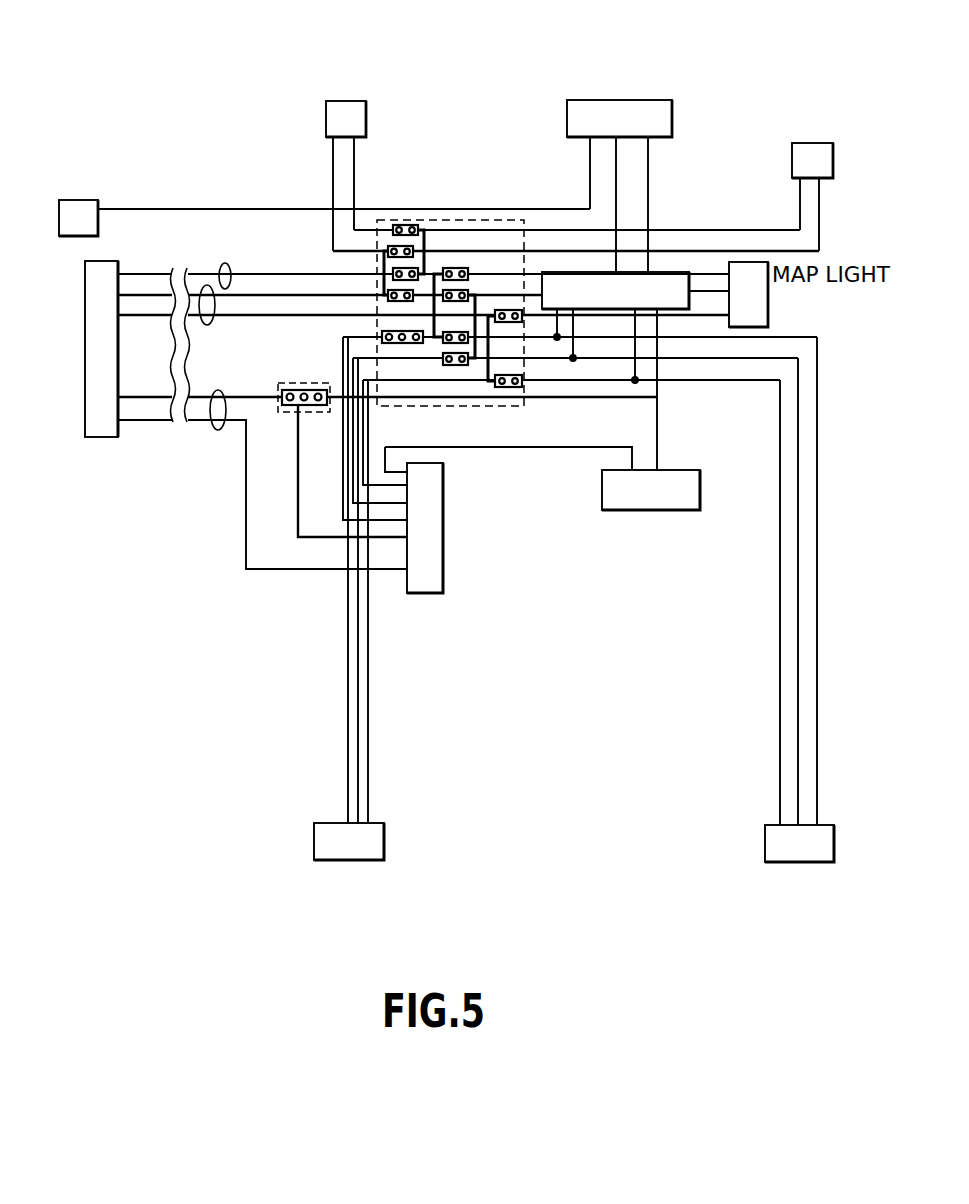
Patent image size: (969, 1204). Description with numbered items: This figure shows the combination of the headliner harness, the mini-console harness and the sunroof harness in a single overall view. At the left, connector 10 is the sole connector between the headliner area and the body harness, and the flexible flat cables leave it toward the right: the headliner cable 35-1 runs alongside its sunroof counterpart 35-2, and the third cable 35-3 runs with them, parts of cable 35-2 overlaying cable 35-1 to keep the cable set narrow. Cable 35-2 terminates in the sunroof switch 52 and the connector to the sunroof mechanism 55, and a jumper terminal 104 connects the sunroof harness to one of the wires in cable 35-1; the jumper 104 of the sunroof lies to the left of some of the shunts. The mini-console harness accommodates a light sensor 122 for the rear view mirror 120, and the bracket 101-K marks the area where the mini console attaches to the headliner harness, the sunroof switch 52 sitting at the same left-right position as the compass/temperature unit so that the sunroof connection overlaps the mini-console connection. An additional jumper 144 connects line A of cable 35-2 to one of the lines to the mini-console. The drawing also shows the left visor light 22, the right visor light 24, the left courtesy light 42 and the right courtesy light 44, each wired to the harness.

The connector 10 is at (85, 337).
The left visor light 22 is at (366, 122).
The right visor light 24 is at (833, 166).
The flexible flat cable 35-1 is at (221, 264).
The flexible flat cable 35-2 is at (216, 430).
The wire bundle 35-3 is at (216, 304).
The left courtesy light 42 is at (368, 823).
The right courtesy light 44 is at (779, 823).
The sunroof switch 52 is at (655, 272).
The sunroof mechanism 55 is at (443, 554).
The bracket 101-K is at (702, 580).
The jumper terminal 104 is at (413, 343).
The rear view mirror 120 is at (672, 120).
The light sensor 122 is at (83, 200).
The jumper 144 is at (316, 383).